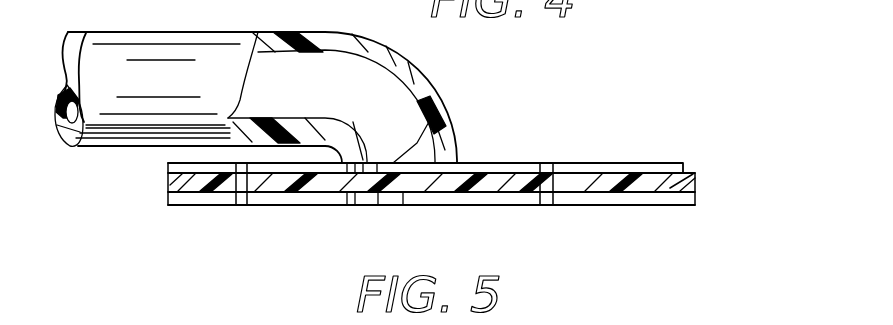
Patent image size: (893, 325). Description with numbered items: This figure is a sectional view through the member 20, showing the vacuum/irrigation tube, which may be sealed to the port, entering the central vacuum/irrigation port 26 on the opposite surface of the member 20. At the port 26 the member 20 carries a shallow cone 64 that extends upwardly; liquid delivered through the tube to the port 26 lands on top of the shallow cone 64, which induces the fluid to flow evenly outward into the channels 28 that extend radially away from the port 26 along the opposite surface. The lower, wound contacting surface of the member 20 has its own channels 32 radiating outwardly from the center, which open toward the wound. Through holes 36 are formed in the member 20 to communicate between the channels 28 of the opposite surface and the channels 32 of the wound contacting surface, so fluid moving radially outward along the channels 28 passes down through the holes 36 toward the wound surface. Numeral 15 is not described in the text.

The cable 15 is at (87, 49).
The member 20 is at (478, 179).
The central vacuum/irrigation port 26 is at (432, 140).
The channels 28 is at (628, 168).
The channels 32 is at (631, 195).
The through holes 36 is at (548, 162).
The shallow cone 64 is at (415, 152).